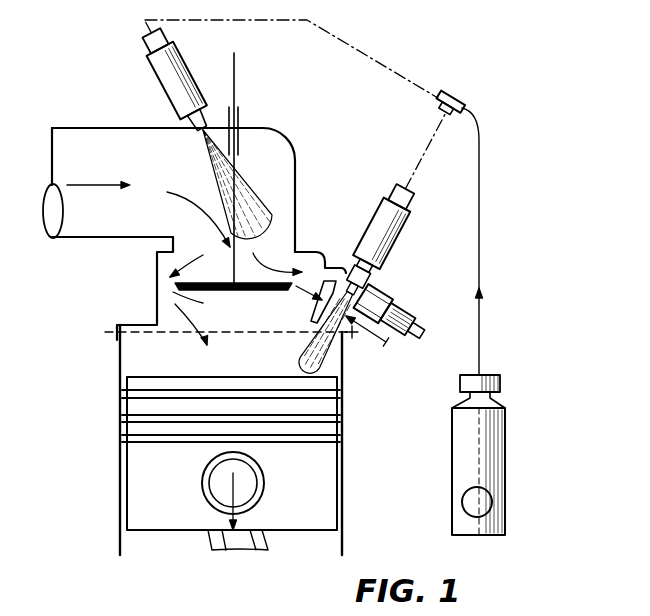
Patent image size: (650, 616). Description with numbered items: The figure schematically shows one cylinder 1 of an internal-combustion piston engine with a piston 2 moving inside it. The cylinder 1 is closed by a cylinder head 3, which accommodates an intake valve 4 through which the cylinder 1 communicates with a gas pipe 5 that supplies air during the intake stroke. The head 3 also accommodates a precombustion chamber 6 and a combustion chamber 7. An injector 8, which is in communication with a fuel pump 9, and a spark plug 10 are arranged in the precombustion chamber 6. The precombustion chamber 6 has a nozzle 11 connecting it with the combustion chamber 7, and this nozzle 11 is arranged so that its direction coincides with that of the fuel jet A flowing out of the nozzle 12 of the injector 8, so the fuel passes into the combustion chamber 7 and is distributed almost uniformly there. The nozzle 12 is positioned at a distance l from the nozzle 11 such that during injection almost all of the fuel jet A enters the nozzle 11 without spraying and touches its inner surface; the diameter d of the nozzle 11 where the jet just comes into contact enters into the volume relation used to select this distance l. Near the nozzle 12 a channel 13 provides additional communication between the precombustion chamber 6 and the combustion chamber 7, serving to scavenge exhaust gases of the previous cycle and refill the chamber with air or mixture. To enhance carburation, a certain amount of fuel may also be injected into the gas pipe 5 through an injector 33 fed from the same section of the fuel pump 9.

The cylinder 1 is at (122, 357).
The piston 2 is at (138, 460).
The cylinder head 3 is at (155, 262).
The intake valve 4 is at (237, 293).
The gas pipe 5 is at (297, 160).
The precombustion chamber 6 is at (368, 279).
The combustion chamber 7 is at (173, 292).
The injector 8 is at (375, 223).
The fuel pump 9 is at (462, 445).
The spark plug 10 is at (410, 318).
The nozzle 11 is at (343, 335).
The nozzle 12 is at (370, 265).
The channel 13 is at (325, 276).
The injector 33 is at (163, 83).
The diameter of the nozzle d is at (317, 310).
The distance l is at (386, 342).
The fuel jet A is at (296, 353).